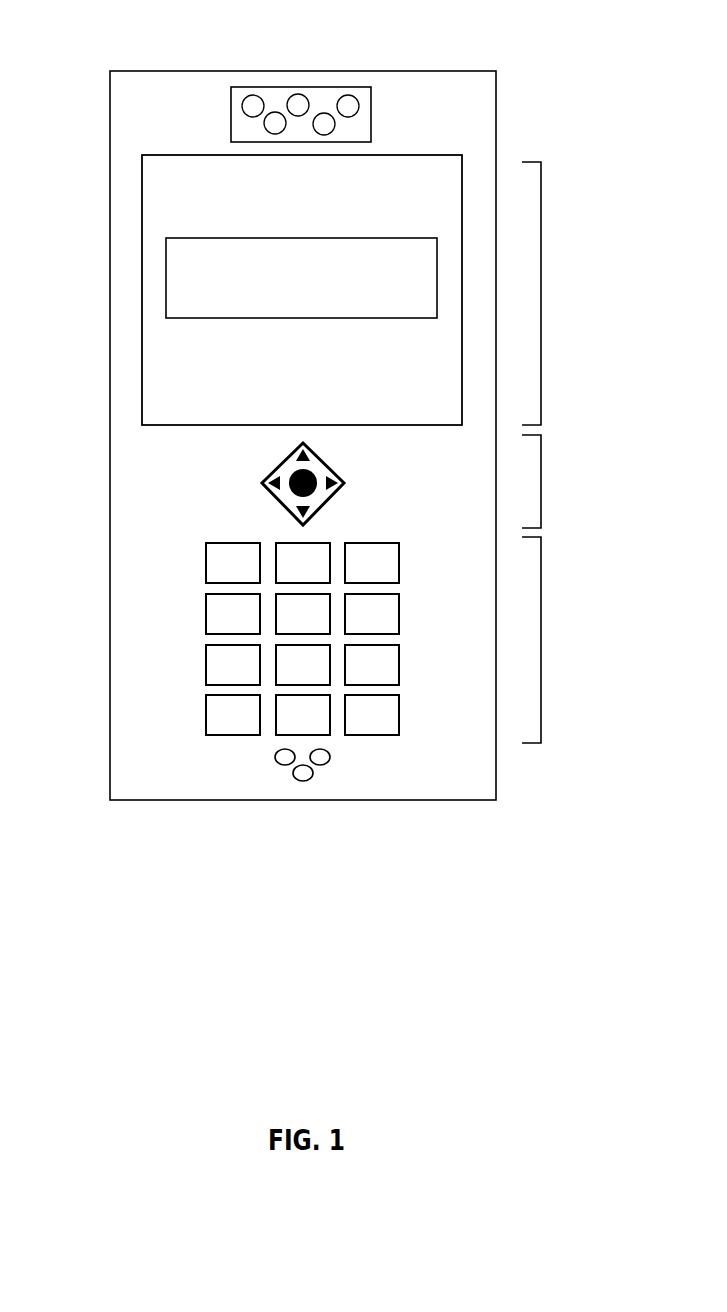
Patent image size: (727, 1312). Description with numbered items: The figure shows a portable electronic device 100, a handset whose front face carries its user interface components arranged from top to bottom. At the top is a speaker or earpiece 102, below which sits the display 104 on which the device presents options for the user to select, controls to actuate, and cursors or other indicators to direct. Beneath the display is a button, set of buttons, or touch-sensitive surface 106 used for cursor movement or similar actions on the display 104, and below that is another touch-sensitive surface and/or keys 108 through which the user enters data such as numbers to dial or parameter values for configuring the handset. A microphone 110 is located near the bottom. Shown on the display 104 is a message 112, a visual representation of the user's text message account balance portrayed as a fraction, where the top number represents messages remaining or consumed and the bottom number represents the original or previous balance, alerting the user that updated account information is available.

The portable electronic device 100 is at (123, 71).
The speaker or earpiece 102 is at (332, 87).
The display 104 is at (541, 288).
The button, set of buttons, or touch-sensitive surface 106 is at (541, 481).
The touch-sensitive surface and/or keys 108 is at (541, 627).
The microphone 110 is at (303, 781).
The message 112 is at (166, 276).